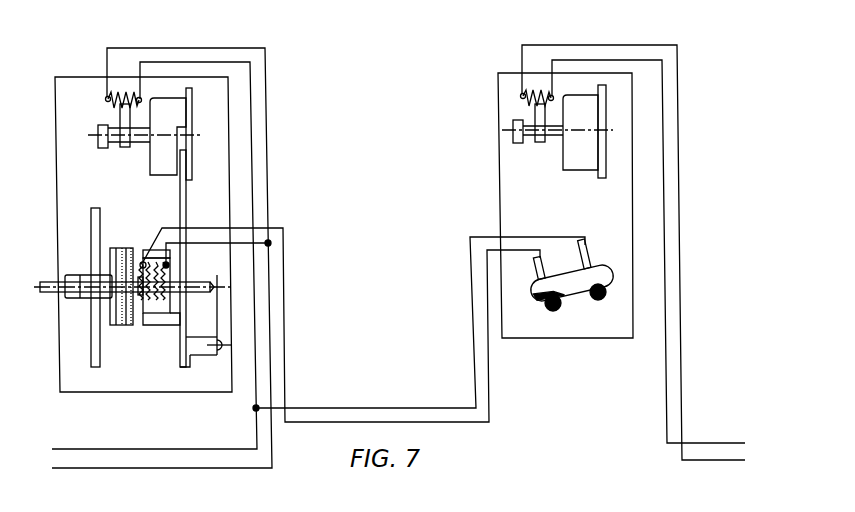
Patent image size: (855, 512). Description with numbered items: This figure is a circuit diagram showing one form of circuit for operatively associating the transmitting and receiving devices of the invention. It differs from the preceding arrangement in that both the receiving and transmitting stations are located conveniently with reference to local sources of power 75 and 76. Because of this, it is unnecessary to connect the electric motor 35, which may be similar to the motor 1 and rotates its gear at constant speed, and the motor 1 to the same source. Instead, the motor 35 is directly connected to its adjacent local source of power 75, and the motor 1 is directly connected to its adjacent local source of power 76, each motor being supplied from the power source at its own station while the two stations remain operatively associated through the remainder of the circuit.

The electric motor 35 is at (177, 113).
The motor 1 is at (595, 102).
The local source of power 75 is at (58, 458).
The local source of power 76 is at (737, 451).